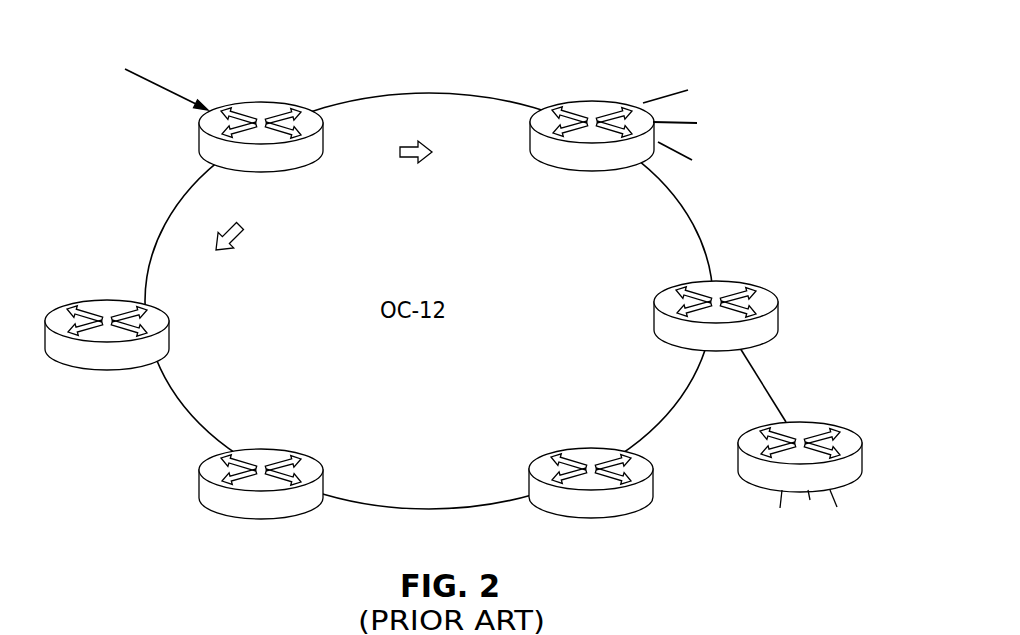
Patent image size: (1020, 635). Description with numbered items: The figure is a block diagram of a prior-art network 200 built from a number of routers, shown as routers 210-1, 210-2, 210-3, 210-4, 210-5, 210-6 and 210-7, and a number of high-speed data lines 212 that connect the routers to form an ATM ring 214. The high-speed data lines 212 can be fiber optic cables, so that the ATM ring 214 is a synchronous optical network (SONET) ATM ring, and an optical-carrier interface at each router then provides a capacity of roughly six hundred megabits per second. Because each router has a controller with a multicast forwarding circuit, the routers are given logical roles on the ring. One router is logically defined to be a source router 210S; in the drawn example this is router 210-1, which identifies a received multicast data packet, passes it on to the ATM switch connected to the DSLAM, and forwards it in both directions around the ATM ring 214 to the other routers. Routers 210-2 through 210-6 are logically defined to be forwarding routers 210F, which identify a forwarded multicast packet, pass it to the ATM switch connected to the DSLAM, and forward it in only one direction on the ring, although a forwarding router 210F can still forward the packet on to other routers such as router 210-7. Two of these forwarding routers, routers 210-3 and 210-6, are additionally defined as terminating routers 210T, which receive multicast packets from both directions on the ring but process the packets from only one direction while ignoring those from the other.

The network 200 is at (578, 38).
The source router 210S is at (262, 102).
The router 210-1 is at (297, 168).
The router 210-2 is at (158, 318).
The router 210-3 is at (265, 452).
The router 210-4 is at (558, 168).
The router 210-5 is at (655, 320).
The router 210-6 is at (553, 452).
The router 210-7 is at (806, 422).
The forwarding router 210F is at (677, 293).
The terminating router 210T is at (235, 517).
The high-speed data line 212 is at (392, 93).
The ATM ring 214 is at (481, 94).